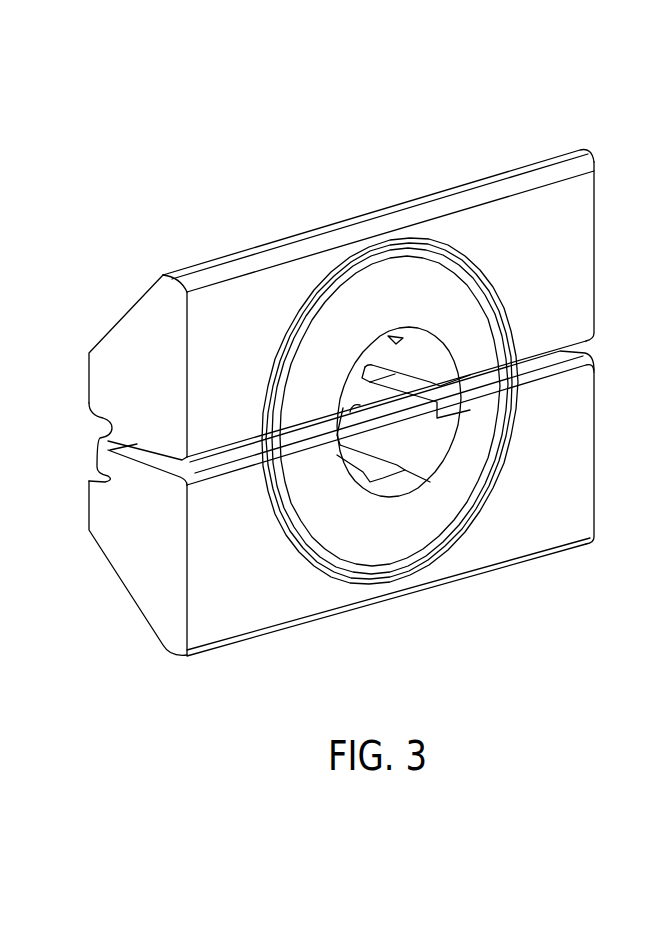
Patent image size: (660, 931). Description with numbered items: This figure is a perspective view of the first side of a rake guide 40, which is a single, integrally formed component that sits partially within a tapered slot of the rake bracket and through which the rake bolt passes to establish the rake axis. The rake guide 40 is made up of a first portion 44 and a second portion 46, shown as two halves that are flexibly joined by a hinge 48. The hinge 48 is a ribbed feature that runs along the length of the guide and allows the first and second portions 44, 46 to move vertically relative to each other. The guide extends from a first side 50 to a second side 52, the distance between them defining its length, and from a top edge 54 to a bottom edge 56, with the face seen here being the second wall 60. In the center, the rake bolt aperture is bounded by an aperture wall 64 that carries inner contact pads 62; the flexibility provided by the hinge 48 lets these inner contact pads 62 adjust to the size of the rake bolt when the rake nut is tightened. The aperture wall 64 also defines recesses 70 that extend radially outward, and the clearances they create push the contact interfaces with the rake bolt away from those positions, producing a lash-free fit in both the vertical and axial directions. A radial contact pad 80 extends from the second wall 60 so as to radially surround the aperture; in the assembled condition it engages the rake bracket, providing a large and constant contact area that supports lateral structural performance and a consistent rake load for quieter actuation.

The first rake guide 40 is at (298, 210).
The first portion 44 is at (527, 167).
The second portion 46 is at (520, 566).
The hinge 48 is at (97, 438).
The first side 50 is at (121, 570).
The second side 52 is at (595, 256).
The top edge 54 is at (396, 218).
The bottom edge 56 is at (255, 638).
The second wall 60 is at (293, 608).
The inner contact pads 62 is at (382, 432).
The aperture wall 64 is at (410, 432).
The recesses 70 is at (385, 473).
The radial contact pad 80 is at (437, 275).